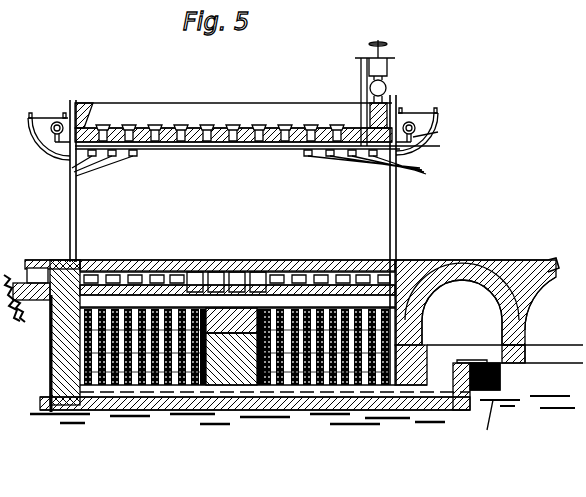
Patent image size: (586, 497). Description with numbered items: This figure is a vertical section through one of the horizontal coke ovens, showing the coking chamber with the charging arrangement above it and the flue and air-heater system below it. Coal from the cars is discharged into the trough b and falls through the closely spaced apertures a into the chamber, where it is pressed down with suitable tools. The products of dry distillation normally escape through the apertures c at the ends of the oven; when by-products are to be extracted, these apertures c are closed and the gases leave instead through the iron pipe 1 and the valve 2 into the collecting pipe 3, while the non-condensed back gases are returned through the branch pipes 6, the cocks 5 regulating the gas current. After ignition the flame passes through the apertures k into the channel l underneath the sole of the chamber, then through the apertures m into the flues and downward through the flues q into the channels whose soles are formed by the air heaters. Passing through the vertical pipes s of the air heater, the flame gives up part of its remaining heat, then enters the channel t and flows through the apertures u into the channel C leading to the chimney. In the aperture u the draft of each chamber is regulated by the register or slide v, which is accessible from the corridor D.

The apertures a is at (103, 126).
The trough b is at (241, 128).
The iron pipe 1 is at (364, 100).
The valve 2 is at (392, 62).
The collecting pipe 3 is at (388, 84).
The cock 5 is at (425, 135).
The branch pipe 6 is at (410, 143).
The apertures c is at (70, 163).
The flues q is at (200, 262).
The apertures m is at (170, 262).
The channel l is at (150, 262).
The apertures k is at (83, 262).
The channel C is at (455, 318).
The register or slide v is at (470, 302).
The corridor D is at (562, 288).
The vertical pipes s is at (110, 387).
The channel t is at (232, 390).
The apertures u is at (444, 378).